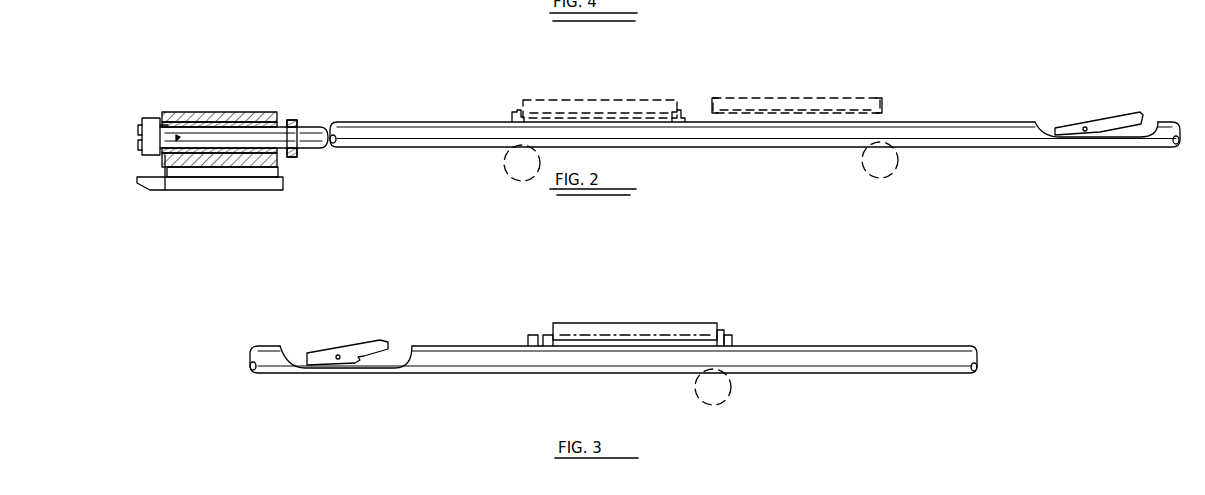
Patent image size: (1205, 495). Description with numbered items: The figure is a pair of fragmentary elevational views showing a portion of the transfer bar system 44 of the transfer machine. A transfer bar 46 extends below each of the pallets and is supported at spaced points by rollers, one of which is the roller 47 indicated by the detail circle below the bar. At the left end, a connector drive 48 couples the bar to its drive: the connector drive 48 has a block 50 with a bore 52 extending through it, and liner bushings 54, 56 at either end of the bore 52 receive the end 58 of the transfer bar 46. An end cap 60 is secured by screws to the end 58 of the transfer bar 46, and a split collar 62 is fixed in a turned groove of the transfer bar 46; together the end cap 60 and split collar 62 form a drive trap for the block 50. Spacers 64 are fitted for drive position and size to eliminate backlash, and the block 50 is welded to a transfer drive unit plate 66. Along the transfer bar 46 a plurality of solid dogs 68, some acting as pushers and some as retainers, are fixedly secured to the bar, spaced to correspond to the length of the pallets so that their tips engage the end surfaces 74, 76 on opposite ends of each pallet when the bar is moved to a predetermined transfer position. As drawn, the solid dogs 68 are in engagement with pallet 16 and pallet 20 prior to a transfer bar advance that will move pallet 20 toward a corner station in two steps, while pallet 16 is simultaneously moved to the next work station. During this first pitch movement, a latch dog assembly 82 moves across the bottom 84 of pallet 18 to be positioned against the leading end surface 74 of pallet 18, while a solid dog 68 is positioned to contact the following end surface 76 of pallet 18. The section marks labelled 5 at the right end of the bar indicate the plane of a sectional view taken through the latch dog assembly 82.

In FIG. 2, the section line 5- 5 is at (1145, 100).
In FIG. 3, the pallet 16 is at (625, 330).
In FIG. 2, the pallet 18 is at (793, 98).
In FIG. 2, the pallet 20 is at (605, 100).
In FIG. 2, the transfer bar system 44 is at (982, 100).
In FIG. 3, the transfer bar system 44 is at (838, 310).
In FIG. 2, the transfer bar 46 is at (405, 122).
In FIG. 2, the roller 47 is at (512, 178).
In FIG. 3, the roller 47 is at (727, 402).
In FIG. 2, the connector drive 48 is at (255, 95).
In FIG. 2, the block 50 is at (205, 112).
In FIG. 2, the bore 52 is at (230, 122).
In FIG. 2, the liner bushing 54 is at (172, 112).
In FIG. 2, the liner bushing 56 is at (270, 112).
In FIG. 2, the end of transfer bar 58 is at (150, 158).
In FIG. 2, the end cap 60 is at (148, 125).
In FIG. 2, the split collar 62 is at (292, 120).
In FIG. 2, the spacers 64 is at (168, 168).
In FIG. 2, the transfer drive unit plate 66 is at (235, 185).
In FIG. 2, the solid dog 68 is at (515, 110).
In FIG. 3, the solid dog 68 is at (530, 335).
In FIG. 2, the end surface 74 is at (713, 100).
In FIG. 3, the end surface 74 is at (548, 335).
In FIG. 3, the end surface 76 is at (720, 330).
In FIG. 2, the latch dog assembly 82 is at (1086, 127).
In FIG. 3, the latch dog assembly 82 is at (347, 350).
In FIG. 2, the bottom of pallet 84 is at (882, 112).